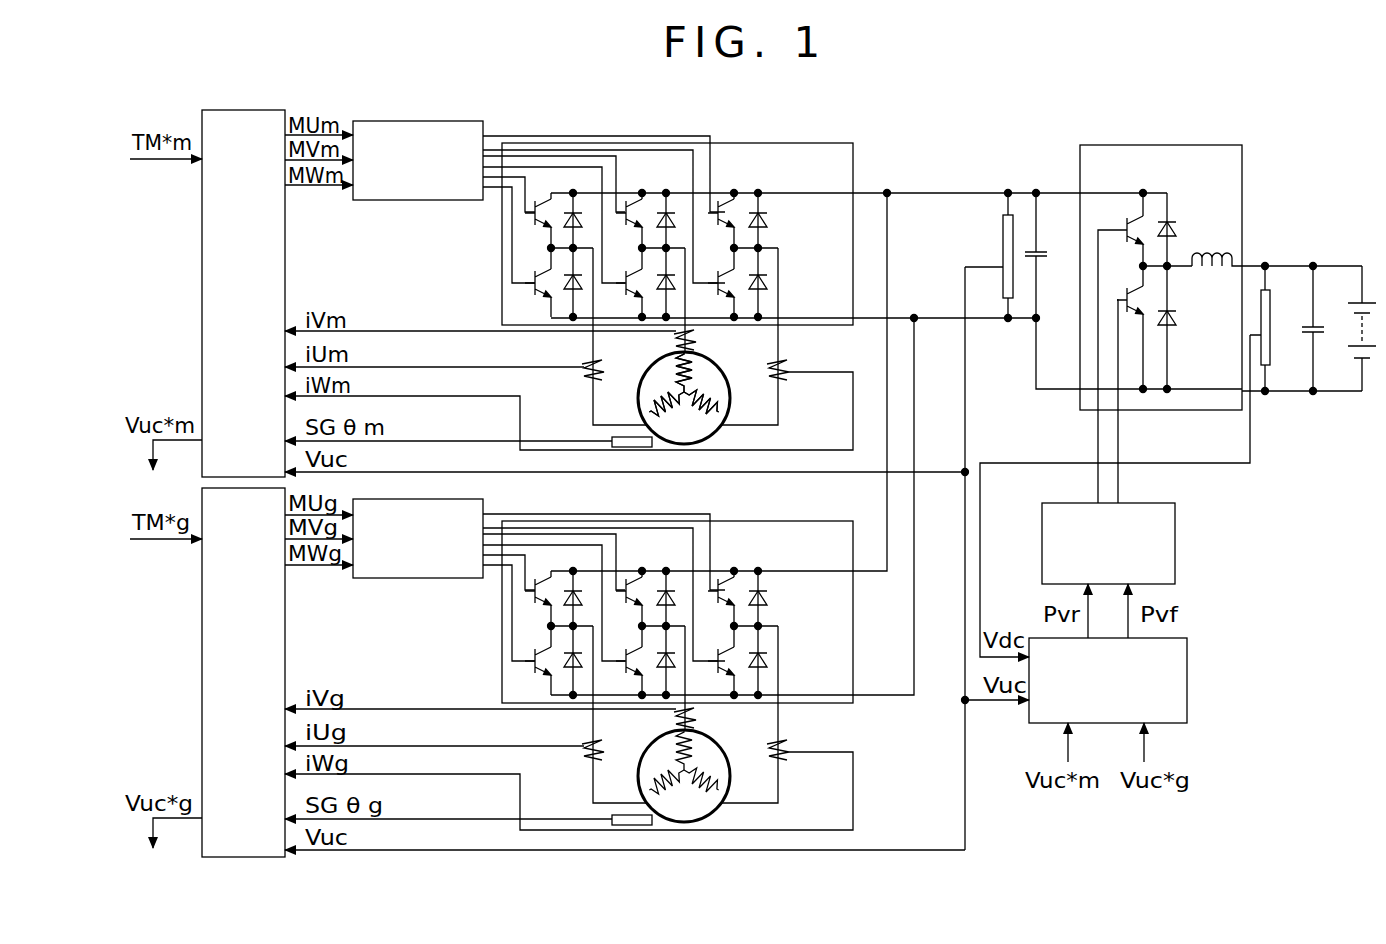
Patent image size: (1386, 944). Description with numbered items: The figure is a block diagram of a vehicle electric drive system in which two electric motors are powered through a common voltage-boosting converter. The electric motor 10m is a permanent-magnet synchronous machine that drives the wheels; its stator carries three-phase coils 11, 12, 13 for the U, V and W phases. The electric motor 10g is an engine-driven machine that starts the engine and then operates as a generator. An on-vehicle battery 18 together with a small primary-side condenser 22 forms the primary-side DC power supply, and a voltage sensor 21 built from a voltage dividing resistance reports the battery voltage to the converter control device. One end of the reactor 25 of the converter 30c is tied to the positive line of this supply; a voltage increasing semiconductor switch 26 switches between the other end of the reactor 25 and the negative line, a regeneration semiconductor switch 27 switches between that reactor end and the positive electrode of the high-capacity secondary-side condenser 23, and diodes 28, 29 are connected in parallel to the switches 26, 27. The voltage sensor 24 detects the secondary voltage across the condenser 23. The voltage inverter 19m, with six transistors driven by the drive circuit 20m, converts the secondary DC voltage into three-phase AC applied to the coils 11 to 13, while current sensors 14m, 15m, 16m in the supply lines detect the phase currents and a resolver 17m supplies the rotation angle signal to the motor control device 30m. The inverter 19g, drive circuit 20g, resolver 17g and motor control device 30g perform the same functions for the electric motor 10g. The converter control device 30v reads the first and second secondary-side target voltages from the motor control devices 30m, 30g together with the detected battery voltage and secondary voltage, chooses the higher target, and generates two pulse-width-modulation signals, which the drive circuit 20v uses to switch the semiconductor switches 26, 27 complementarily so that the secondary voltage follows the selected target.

The electric motor 10m is at (738, 357).
The electric motor 10g is at (735, 737).
The U-phase stator coil 11 is at (686, 399).
The V-phase stator coil 12 is at (666, 396).
The W-phase stator coil 13 is at (701, 393).
The current sensor 14m is at (580, 373).
The current sensor 15m is at (673, 338).
The current sensor 16m is at (785, 365).
The resolver 17m is at (612, 437).
The resolver 17g is at (612, 818).
The battery 18 is at (1362, 300).
The voltage inverter 19m is at (773, 143).
The inverter 19g is at (773, 521).
The drive circuit 20m is at (483, 132).
The drive circuit 20g is at (483, 510).
The drive circuit 20v is at (1175, 530).
The voltage sensor 21 is at (1272, 305).
The primary-side condenser 22 is at (1308, 335).
The secondary-side condenser 23 is at (1042, 250).
The voltage sensor 24 is at (1003, 245).
The reactor 25 is at (1208, 257).
The voltage increasing semiconductor switch 26 is at (1128, 291).
The regeneration semiconductor switch 27 is at (1128, 227).
The diode 28 is at (1178, 300).
The diode 29 is at (1172, 227).
The motor control device 30m is at (287, 237).
The motor control device 30g is at (287, 615).
The converter 30c is at (1242, 168).
The converter control device 30v is at (1190, 650).